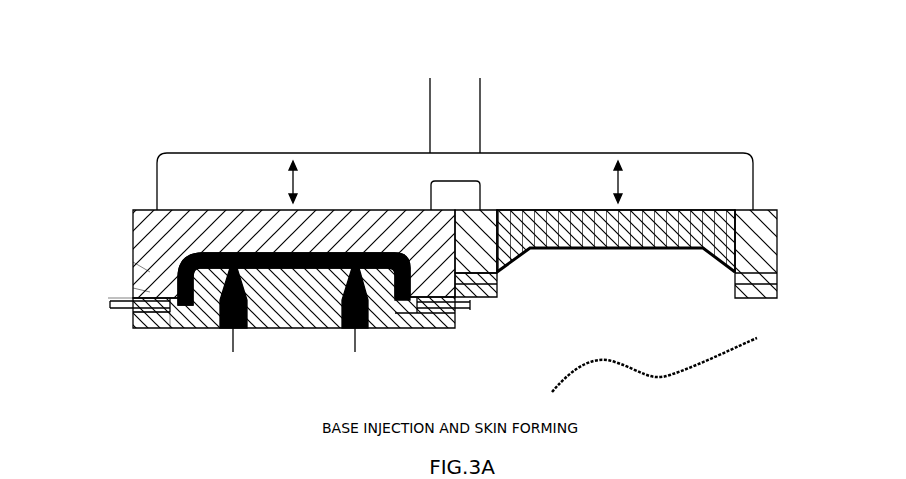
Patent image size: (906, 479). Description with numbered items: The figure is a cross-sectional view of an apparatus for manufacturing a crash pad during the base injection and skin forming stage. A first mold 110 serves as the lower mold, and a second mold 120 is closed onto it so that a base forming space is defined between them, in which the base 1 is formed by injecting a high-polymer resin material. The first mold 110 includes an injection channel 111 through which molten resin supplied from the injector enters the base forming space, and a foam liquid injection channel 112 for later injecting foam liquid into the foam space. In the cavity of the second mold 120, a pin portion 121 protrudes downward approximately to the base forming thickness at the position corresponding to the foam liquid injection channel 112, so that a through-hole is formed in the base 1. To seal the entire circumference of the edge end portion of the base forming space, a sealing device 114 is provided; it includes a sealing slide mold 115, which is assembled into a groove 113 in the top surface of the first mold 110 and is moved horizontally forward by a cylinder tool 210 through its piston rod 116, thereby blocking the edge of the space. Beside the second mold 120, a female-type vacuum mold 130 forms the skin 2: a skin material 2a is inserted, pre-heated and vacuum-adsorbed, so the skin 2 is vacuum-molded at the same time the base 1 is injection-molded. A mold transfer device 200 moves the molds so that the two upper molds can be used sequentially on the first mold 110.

The base 1 is at (203, 256).
The skin 2 is at (657, 368).
The skin material 2a is at (707, 367).
The first mold 110 is at (160, 333).
The injection channel 111 is at (372, 326).
The foam liquid injection channel 112 is at (292, 300).
The groove 113 is at (158, 330).
The sealing device 114 is at (135, 312).
The sealing slide mold 115 is at (150, 272).
The piston rod 116 is at (150, 292).
The second mold 120 is at (131, 208).
The pin portion 121 is at (297, 258).
The vacuum mold 130 is at (778, 208).
The mold transfer device 200 is at (470, 95).
The cylinder tool 210 is at (106, 298).